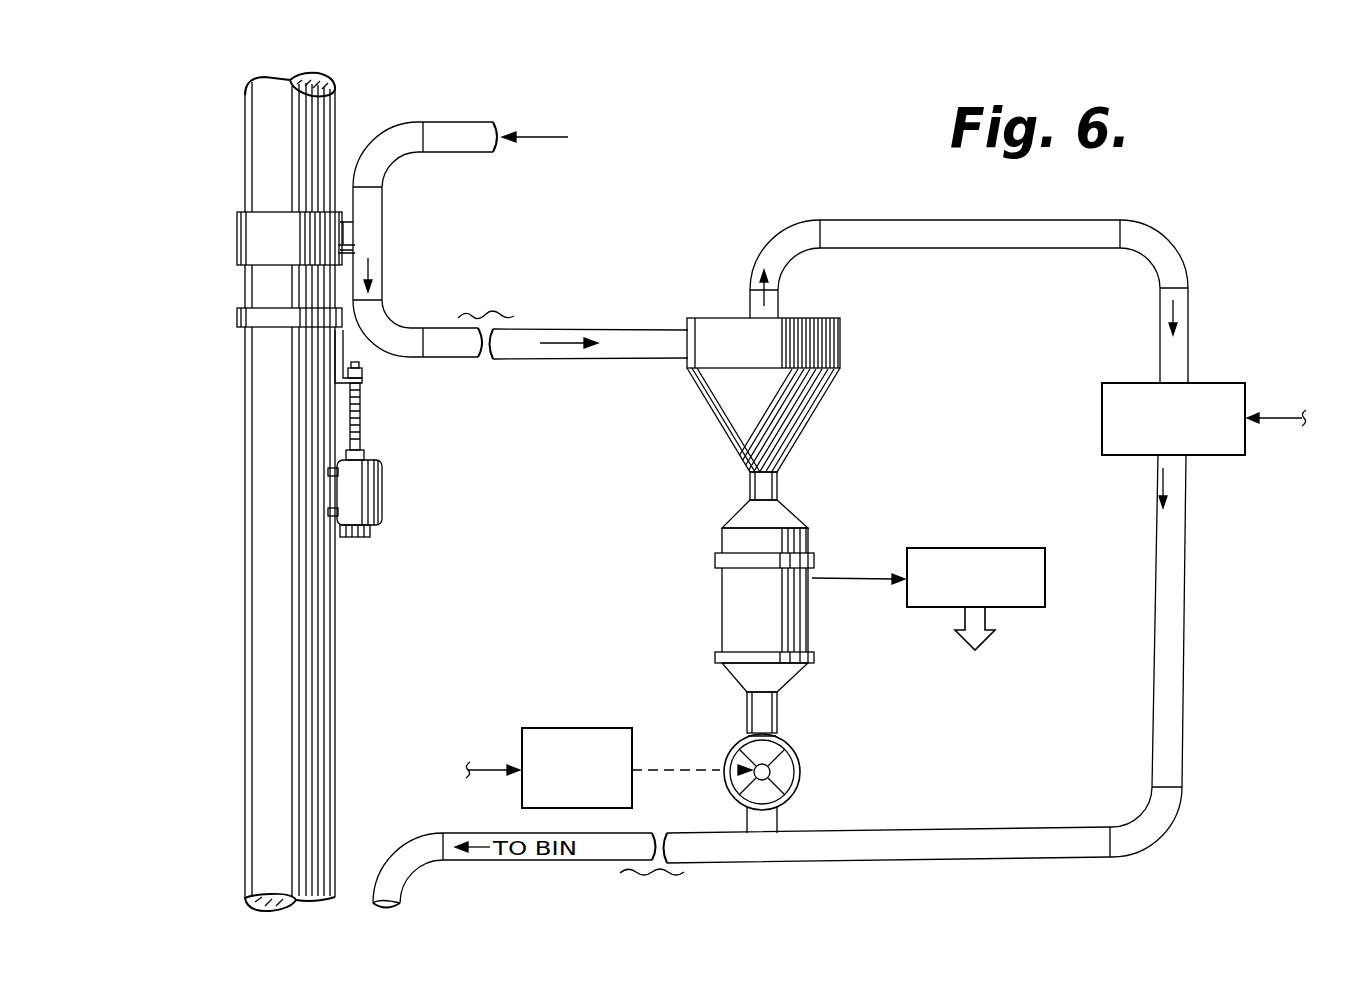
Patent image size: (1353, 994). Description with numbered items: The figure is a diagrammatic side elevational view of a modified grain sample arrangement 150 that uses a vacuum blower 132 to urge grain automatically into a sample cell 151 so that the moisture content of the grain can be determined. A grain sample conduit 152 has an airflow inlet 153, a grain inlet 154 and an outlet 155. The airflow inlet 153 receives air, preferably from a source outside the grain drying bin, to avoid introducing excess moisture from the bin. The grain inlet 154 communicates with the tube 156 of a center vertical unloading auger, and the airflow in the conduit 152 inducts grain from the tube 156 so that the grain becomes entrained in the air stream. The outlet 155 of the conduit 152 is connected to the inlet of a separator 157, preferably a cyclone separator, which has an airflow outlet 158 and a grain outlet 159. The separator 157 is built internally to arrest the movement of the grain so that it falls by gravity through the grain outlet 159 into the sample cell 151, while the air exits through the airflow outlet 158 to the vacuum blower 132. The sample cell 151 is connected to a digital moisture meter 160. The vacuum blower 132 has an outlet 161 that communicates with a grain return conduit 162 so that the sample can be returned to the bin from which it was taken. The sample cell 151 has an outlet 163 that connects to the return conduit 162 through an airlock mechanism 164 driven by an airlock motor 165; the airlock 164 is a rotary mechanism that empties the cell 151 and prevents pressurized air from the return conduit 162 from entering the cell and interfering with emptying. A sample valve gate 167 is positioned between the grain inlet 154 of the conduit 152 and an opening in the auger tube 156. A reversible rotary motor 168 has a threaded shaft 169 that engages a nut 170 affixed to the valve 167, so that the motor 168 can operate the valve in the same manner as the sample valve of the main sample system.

The vacuum blower 132 is at (1249, 388).
The modified grain sample arrangement 150 is at (1183, 222).
The sample cell 151 is at (732, 608).
The grain sample conduit 152 is at (392, 338).
The airflow inlet 153 is at (478, 130).
The grain inlet 154 is at (350, 240).
The outlet 155 is at (677, 334).
The tube 156 is at (248, 150).
The separator 157 is at (808, 414).
The airflow outlet 158 is at (778, 308).
The grain outlet 159 is at (778, 492).
The digital moisture meter 160 is at (1047, 556).
The outlet 161 is at (1184, 489).
The grain return conduit 162 is at (876, 862).
The outlet 163 is at (778, 710).
The airlock mechanism 164 is at (800, 785).
The airlock motor 165 is at (640, 722).
The sample valve gate 167 is at (340, 344).
The reversible rotary motor 168 is at (383, 500).
The threaded shaft 169 is at (362, 443).
The nut 170 is at (364, 375).